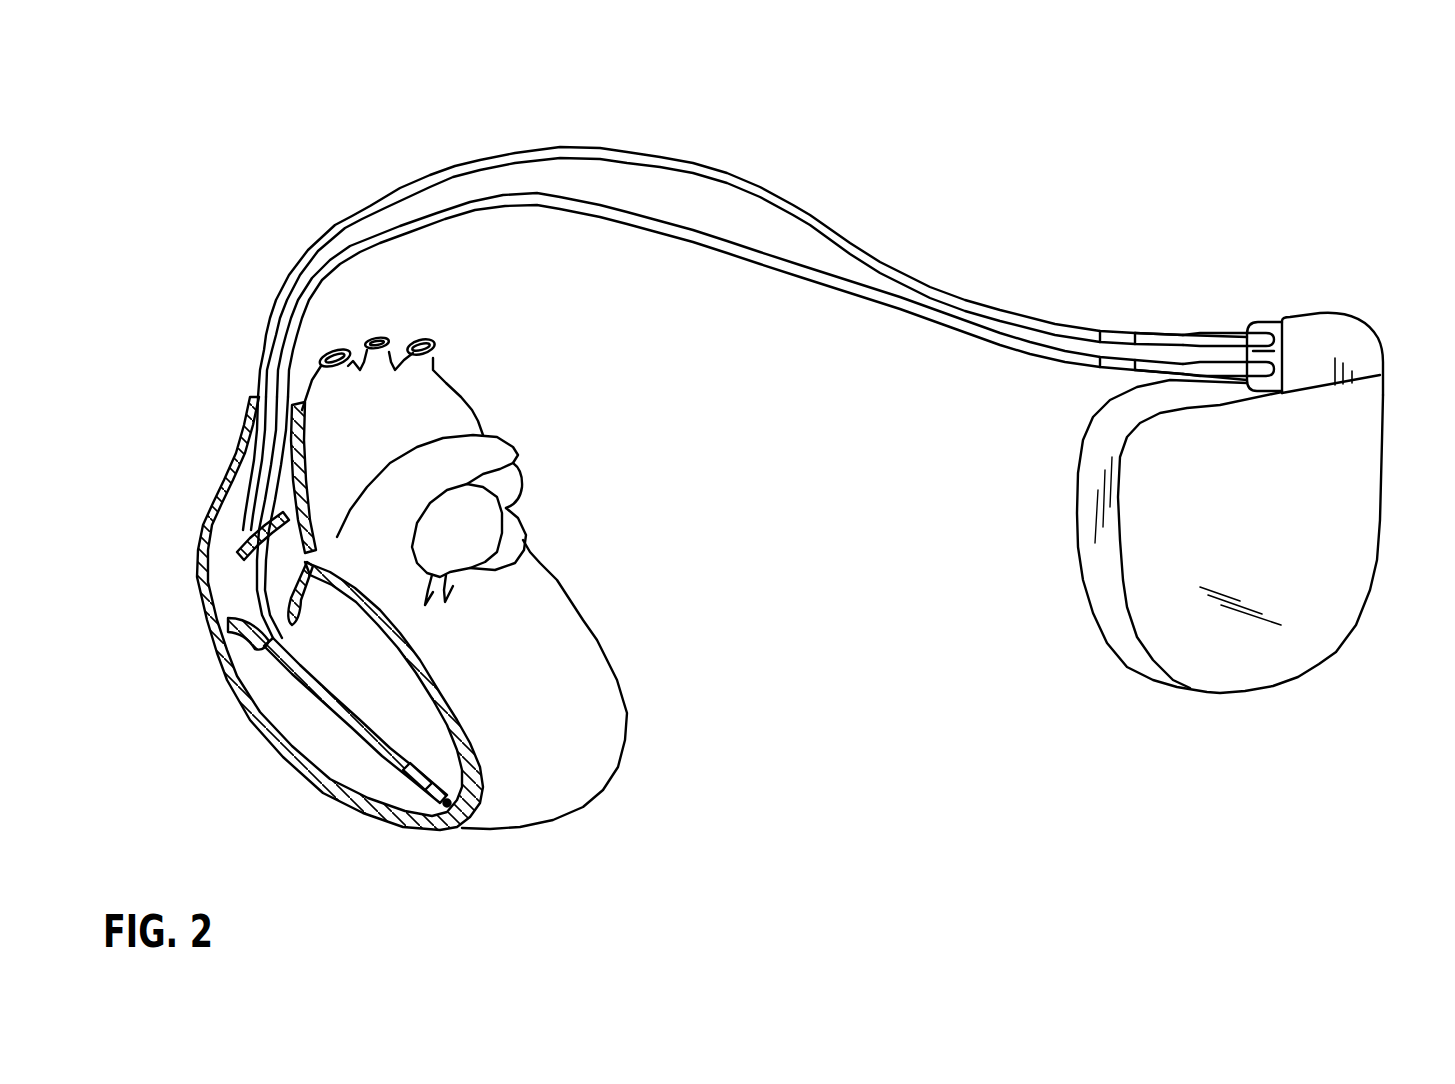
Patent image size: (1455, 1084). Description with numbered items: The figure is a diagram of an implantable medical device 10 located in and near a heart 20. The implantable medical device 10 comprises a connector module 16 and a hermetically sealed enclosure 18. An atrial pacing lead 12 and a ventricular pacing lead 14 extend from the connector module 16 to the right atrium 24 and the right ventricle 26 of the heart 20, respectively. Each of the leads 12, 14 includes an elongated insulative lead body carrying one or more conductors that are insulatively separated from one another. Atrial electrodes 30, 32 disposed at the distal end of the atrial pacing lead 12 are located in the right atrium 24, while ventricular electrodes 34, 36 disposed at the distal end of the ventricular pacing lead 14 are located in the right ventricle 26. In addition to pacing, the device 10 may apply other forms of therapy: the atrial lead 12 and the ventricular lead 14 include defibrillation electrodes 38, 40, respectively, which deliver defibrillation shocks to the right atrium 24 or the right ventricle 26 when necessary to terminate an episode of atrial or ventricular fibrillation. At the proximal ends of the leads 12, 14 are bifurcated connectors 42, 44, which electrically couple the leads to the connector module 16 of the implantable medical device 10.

The implantable medical device 10 is at (1348, 183).
The atrial pacing lead 12 is at (943, 293).
The ventricular pacing lead 14 is at (846, 288).
The connector module 16 is at (1318, 328).
The hermetically sealed enclosure 18 is at (1268, 672).
The heart 20 is at (620, 713).
The right atrium 24 is at (243, 533).
The right ventricle 26 is at (325, 743).
The atrial electrode 30 is at (300, 510).
The atrial electrode 32 is at (230, 577).
The ventricular electrode 34 is at (447, 808).
The ventricular electrode 36 is at (420, 783).
The defibrillation electrode 38 is at (228, 483).
The defibrillation electrode 40 is at (367, 742).
The bifurcated connector 42 is at (1215, 335).
The bifurcated connector 44 is at (1187, 368).